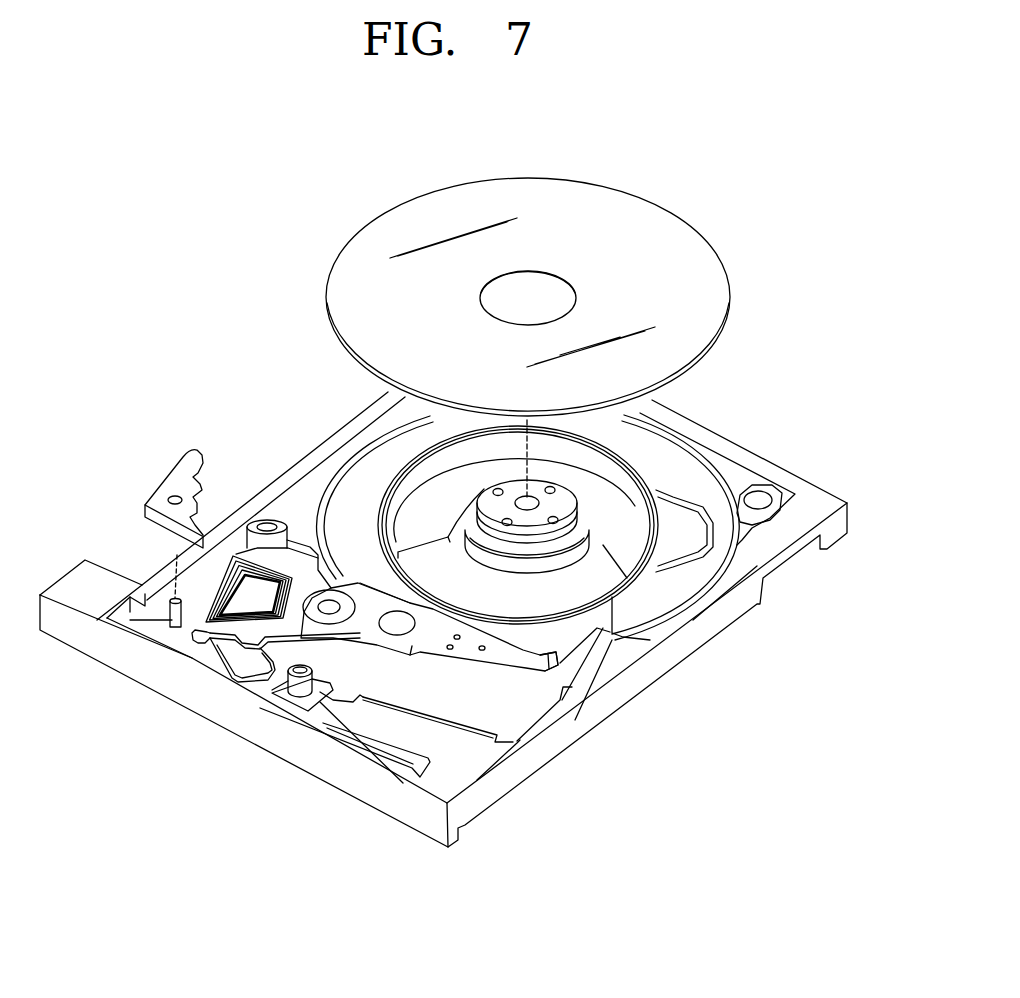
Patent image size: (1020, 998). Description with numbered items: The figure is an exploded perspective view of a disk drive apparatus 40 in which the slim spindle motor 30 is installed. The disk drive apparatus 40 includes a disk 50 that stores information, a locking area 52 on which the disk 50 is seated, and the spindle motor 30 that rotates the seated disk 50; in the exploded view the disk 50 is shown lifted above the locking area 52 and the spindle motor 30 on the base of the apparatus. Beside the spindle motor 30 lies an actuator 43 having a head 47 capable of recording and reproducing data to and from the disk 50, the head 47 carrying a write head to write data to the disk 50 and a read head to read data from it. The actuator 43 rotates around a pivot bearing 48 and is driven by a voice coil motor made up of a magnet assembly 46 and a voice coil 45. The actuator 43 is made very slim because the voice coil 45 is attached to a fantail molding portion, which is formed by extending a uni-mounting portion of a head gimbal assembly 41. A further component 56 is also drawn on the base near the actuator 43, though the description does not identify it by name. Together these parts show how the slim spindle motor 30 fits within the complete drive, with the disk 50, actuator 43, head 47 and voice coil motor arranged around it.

The spindle motor 30 is at (495, 497).
The disk drive apparatus 40 is at (753, 653).
The head gimbal assembly 41 is at (372, 607).
The actuator 43 is at (463, 680).
The voice coil 45 is at (247, 560).
The magnet assembly 46 is at (240, 663).
The head 47 is at (563, 667).
The pivot bearing 48 is at (324, 600).
The disk 50 is at (653, 227).
The locking area 52 is at (680, 470).
The stopper 56 is at (176, 475).